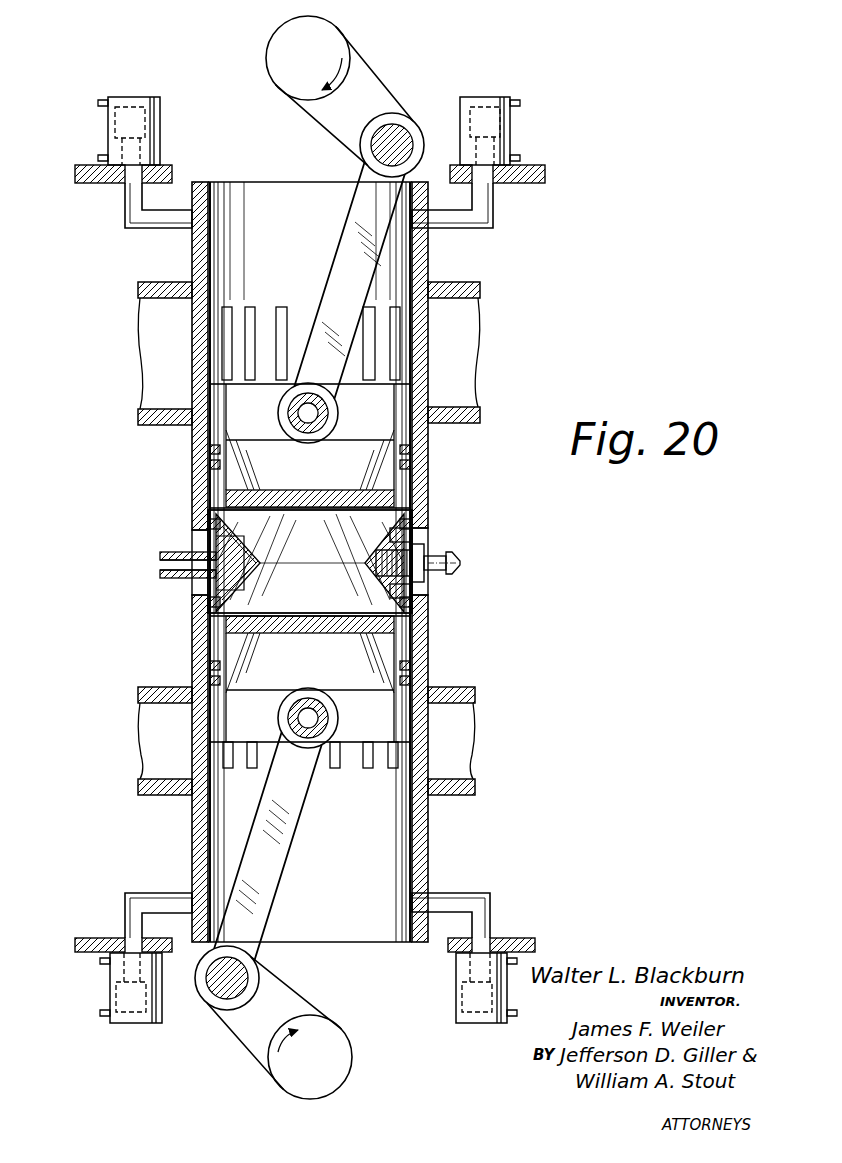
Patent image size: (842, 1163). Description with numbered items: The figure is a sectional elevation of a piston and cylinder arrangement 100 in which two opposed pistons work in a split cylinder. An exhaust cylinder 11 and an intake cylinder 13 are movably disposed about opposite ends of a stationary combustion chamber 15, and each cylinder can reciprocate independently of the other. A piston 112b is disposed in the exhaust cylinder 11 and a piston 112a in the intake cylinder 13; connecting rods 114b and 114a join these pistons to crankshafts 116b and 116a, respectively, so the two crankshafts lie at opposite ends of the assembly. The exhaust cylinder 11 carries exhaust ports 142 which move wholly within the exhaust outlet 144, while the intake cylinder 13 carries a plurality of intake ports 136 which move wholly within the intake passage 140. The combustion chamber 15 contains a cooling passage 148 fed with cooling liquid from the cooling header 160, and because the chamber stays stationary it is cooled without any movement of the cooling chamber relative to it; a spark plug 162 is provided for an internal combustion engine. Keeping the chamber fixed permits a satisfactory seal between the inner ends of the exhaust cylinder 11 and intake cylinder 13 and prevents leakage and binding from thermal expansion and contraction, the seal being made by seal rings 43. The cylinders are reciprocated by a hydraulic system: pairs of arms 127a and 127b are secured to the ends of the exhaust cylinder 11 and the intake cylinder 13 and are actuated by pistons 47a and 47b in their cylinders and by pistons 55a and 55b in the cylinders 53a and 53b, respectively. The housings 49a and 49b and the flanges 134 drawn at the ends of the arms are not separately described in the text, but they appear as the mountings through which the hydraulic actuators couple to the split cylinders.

The exhaust cylinder 11 is at (432, 450).
The intake cylinder 13 is at (420, 656).
The combustion chamber 15 is at (414, 585).
The seal rings 43 is at (410, 524).
The piston 47a is at (145, 118).
The piston 47b is at (486, 102).
The upper left valve housing 49a is at (108, 145).
The upper right valve housing 49b is at (512, 145).
The cylinder 53a is at (122, 996).
The cylinder 53b is at (468, 996).
The piston 55a is at (110, 975).
The piston 55b is at (456, 968).
The piston and cylinder arrangement 100 is at (434, 497).
The piston 112a is at (310, 628).
The piston 112b is at (324, 490).
The connecting rod 114a is at (272, 860).
The connecting rod 114b is at (352, 237).
The crankshaft 116a is at (290, 1090).
The crankshaft 116b is at (282, 44).
The arms 127a is at (127, 218).
The arms 127b is at (485, 202).
The mounting flange 134 is at (84, 185).
The intake ports 136 is at (395, 770).
The intake passage 140 is at (456, 748).
The exhaust ports 142 is at (252, 320).
The exhaust outlet 144 is at (470, 350).
The cooling passage 148 is at (236, 580).
The cooling header 160 is at (166, 565).
The spark plug 162 is at (412, 546).